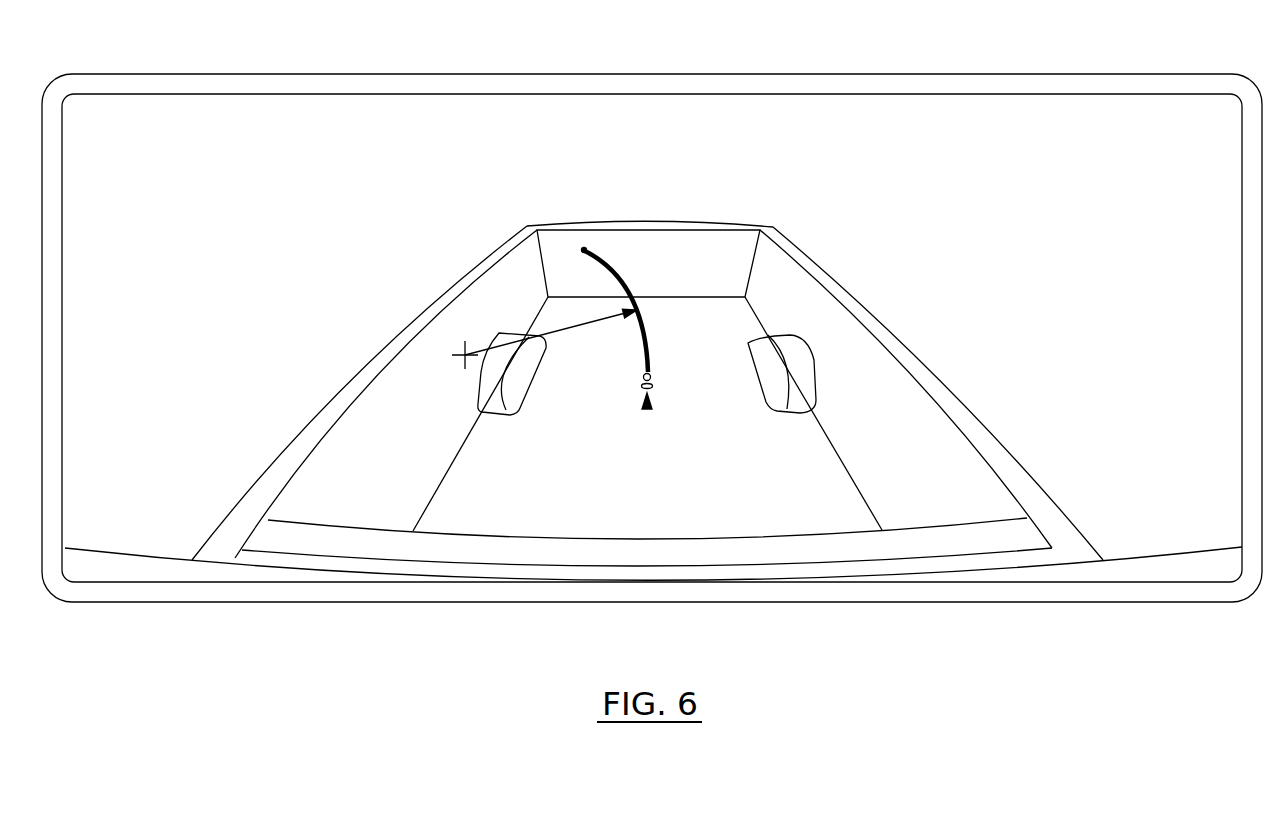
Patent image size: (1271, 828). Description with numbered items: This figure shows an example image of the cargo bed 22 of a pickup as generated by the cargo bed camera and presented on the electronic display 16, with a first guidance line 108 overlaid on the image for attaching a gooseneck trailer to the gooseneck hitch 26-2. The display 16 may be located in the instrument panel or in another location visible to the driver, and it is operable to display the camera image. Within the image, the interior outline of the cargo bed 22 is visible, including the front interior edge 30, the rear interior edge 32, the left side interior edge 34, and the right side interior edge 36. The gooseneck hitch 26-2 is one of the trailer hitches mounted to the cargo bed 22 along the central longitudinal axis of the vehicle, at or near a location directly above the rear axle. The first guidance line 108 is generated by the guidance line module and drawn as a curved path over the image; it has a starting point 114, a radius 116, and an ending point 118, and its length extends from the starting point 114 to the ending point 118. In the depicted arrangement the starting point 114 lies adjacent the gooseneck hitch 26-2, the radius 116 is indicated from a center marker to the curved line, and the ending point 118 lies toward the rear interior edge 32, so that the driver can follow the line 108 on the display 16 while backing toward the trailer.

The electronic display 16 is at (957, 73).
The cargo bed 22 is at (930, 490).
The gooseneck hitch 26-2 is at (647, 408).
The front interior edge 30 is at (800, 535).
The rear interior edge 32 is at (593, 229).
The left side interior edge 34 is at (910, 362).
The right side interior edge 36 is at (303, 471).
The first guidance line 108 is at (643, 333).
The starting point 114 is at (640, 376).
The radius 116 is at (555, 332).
The ending point 118 is at (583, 250).